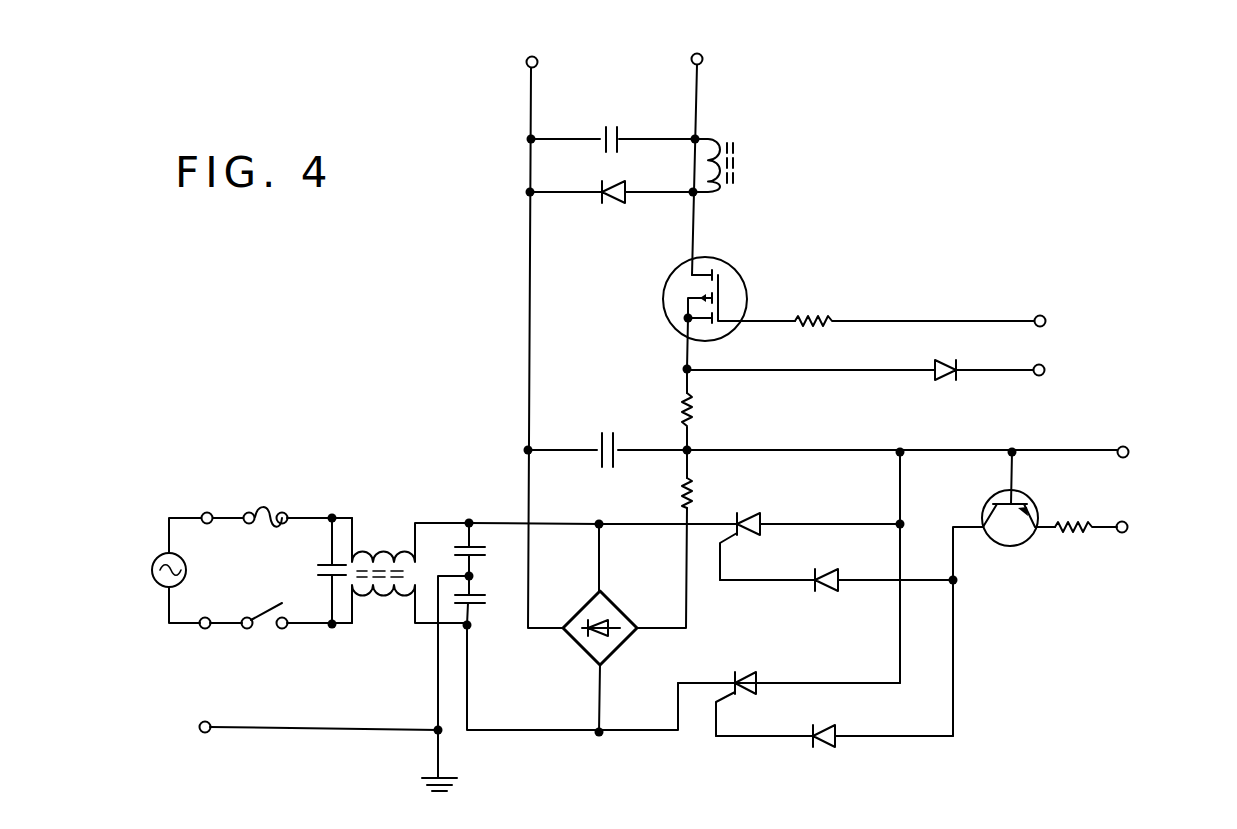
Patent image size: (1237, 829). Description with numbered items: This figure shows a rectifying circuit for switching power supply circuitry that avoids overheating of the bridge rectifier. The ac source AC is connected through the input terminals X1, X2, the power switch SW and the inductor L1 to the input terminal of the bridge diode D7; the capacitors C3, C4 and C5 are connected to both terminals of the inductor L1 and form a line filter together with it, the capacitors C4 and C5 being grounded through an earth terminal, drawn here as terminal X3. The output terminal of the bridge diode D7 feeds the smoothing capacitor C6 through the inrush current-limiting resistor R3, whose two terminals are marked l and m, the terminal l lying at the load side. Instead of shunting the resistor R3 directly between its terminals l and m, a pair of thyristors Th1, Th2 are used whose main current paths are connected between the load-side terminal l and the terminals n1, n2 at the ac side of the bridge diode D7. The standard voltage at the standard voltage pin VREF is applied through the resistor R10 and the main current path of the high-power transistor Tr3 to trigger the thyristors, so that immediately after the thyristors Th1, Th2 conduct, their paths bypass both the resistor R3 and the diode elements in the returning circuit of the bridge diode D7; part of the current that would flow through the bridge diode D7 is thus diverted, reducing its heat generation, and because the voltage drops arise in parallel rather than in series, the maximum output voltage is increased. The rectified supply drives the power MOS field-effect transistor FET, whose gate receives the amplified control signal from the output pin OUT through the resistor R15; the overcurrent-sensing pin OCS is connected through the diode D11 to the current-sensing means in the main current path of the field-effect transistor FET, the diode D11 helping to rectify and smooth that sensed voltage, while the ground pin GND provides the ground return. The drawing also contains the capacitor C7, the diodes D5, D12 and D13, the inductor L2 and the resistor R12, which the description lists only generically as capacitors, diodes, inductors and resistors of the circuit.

The capacitor C7 is at (613, 120).
The diode D5 is at (611, 217).
The inductor L2 is at (734, 165).
The power MOS field-effect transistor FET is at (696, 299).
The resistor R15 is at (913, 304).
The output pin OUT is at (1071, 323).
The diode D11 is at (860, 355).
The overcurrent-sensing pin OCS is at (1070, 372).
The resistor R12 is at (659, 409).
The ground pin GND is at (859, 453).
The load-side terminal of inrush current-limiting resistor l is at (690, 447).
The smoothing capacitor C6 is at (596, 470).
The inrush current-limiting resistor R3 is at (664, 485).
The thyristor Th1 is at (754, 530).
The diode D12 is at (839, 604).
The thyristor Th2 is at (789, 692).
The diode D13 is at (834, 762).
The high-power transistor Tr3 is at (1017, 519).
The resistor R10 is at (1086, 511).
The standard voltage pin VREF is at (1159, 537).
The ac source AC is at (153, 570).
The input terminal X1 is at (216, 500).
The input terminal X2 is at (211, 644).
The terminal X3 is at (308, 709).
The power switch SW is at (291, 606).
The capacitor C3 is at (307, 571).
The inductor L1 is at (410, 591).
The capacitor C4 is at (484, 557).
The capacitor C5 is at (483, 608).
The bridge diode D7 is at (601, 630).
The ac-side terminal of bridge diode n1 is at (603, 588).
The ac-side terminal of bridge diode n2 is at (597, 668).
The terminal of inrush current-limiting resistor m is at (686, 628).